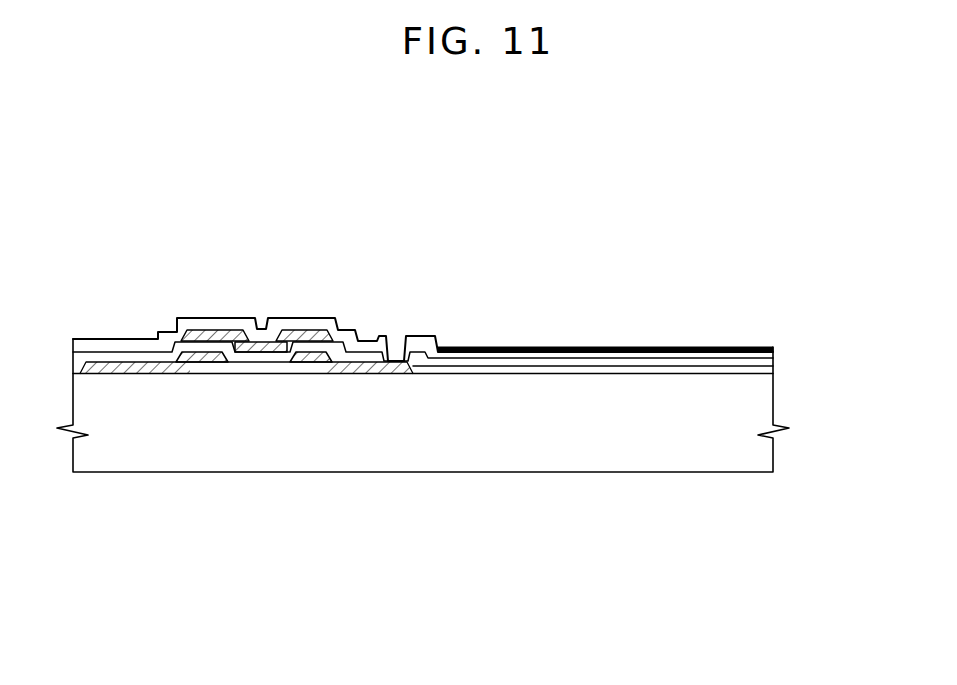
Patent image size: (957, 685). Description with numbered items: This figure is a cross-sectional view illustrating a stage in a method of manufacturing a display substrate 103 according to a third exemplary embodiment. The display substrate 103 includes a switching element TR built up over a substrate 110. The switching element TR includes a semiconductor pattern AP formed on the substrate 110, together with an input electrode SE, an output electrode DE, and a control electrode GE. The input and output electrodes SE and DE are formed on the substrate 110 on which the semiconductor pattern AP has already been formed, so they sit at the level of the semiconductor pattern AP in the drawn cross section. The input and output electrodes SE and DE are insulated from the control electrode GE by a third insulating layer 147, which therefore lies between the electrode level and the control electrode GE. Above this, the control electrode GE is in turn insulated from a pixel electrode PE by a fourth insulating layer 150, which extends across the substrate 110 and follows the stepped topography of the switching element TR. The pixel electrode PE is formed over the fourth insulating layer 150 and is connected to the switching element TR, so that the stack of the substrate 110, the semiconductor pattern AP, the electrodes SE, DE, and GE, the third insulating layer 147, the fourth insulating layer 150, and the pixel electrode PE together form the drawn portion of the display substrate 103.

The display substrate 103 is at (467, 198).
The substrate 110 is at (775, 452).
The third insulating layer 147 is at (775, 369).
The fourth insulating layer 150 is at (775, 358).
The pixel electrode PE is at (775, 347).
The switching element TR is at (246, 446).
The input electrode SE is at (195, 328).
The control electrode GE is at (217, 352).
The semiconductor pattern AP is at (282, 364).
The output electrode DE is at (328, 355).